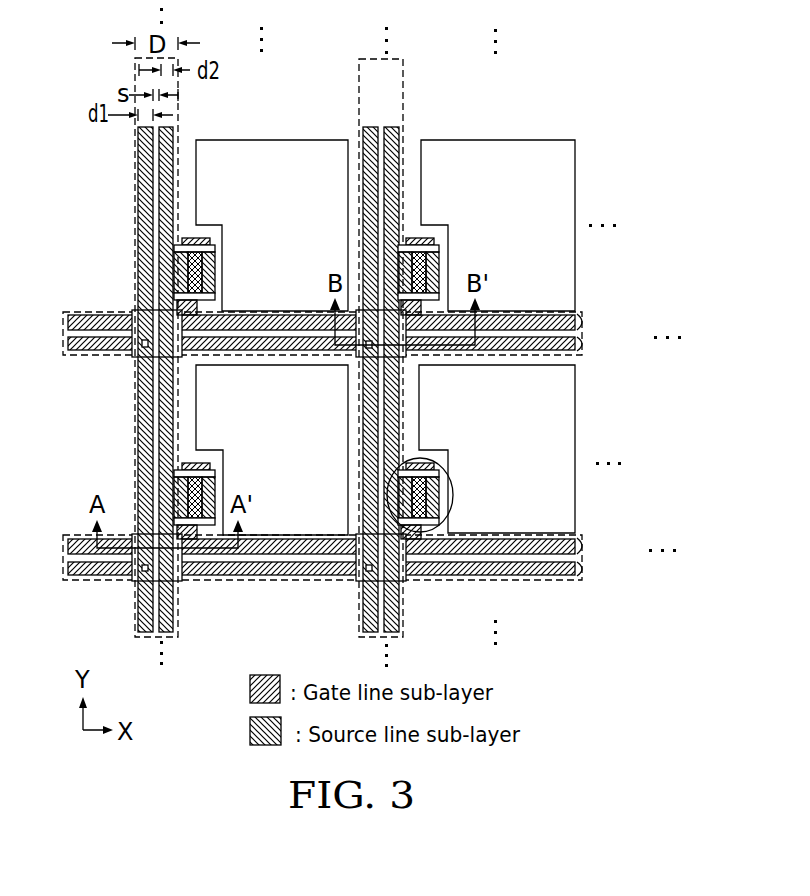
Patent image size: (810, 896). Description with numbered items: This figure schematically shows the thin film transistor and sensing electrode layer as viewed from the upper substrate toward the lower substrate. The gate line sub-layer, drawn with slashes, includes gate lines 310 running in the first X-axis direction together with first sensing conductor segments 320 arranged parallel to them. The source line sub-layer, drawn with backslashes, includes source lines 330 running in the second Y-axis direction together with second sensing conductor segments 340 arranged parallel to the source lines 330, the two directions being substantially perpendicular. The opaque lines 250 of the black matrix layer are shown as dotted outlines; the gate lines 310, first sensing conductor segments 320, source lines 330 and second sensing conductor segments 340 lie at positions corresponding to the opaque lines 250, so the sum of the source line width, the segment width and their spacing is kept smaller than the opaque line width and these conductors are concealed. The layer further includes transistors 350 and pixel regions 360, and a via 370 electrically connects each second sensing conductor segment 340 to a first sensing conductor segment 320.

The opaque line 250 is at (263, 360).
The gate line 310 is at (582, 321).
The first sensing conductor segment 320 is at (582, 346).
The source line 330 is at (173, 610).
The second sensing conductor segment 340 is at (142, 602).
The transistor 350 is at (453, 495).
The pixel region 360 is at (577, 423).
The via 370 is at (131, 330).